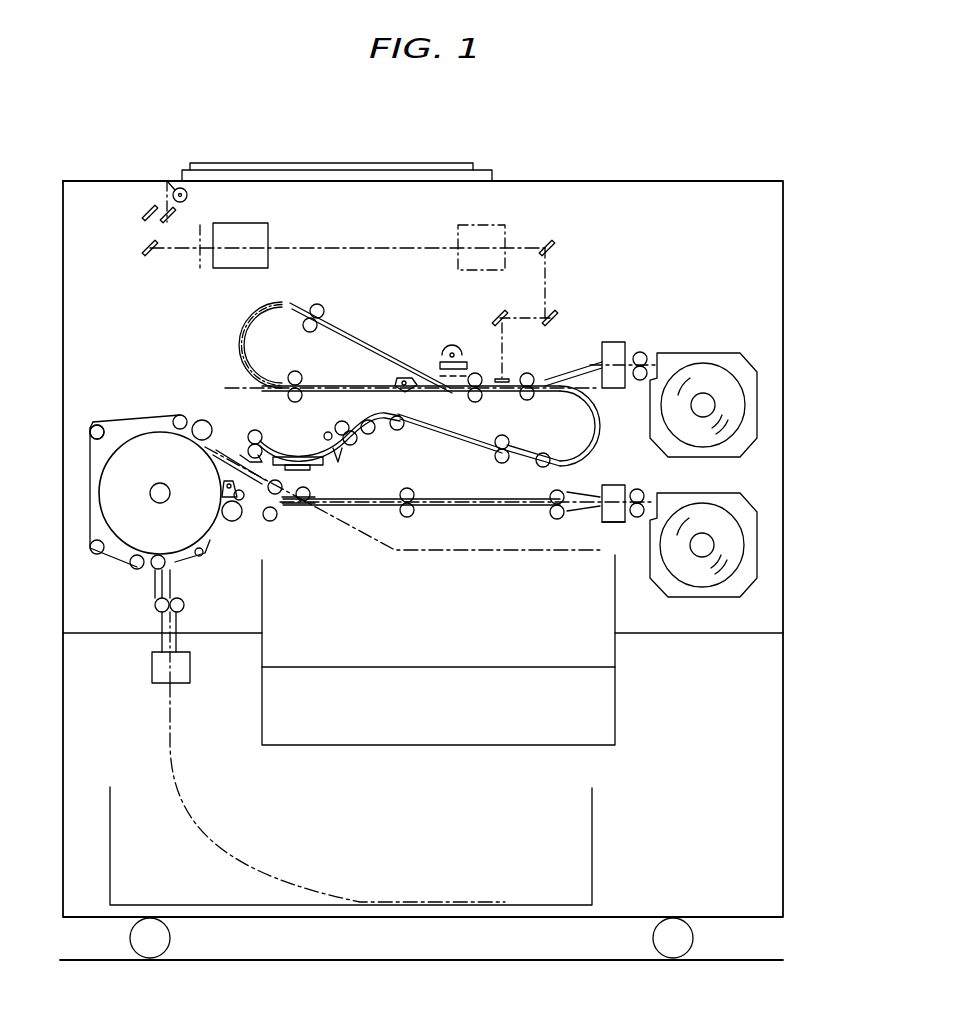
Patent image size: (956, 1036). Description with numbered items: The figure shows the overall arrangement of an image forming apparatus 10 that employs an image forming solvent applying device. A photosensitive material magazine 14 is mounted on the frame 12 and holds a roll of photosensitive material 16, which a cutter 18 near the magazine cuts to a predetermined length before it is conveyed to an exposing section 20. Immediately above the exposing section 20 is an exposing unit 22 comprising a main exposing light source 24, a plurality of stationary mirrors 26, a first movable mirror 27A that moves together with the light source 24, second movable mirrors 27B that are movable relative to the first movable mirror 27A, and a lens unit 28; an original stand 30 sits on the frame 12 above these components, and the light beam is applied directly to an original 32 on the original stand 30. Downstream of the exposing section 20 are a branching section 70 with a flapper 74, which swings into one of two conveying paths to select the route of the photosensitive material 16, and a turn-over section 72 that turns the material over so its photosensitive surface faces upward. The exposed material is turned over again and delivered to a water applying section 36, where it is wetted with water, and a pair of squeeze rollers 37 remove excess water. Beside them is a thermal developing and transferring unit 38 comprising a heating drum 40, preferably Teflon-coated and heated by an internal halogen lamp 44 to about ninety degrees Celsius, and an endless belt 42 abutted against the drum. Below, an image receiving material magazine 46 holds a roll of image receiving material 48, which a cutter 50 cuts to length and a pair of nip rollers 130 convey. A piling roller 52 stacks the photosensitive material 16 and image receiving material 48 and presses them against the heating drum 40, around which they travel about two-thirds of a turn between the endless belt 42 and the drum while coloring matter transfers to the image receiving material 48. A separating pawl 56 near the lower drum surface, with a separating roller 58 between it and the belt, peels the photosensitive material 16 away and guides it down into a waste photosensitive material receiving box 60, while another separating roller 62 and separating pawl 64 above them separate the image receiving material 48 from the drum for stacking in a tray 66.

The image forming apparatus 10 is at (165, 180).
The frame 12 is at (590, 181).
The photosensitive material magazine 14 is at (706, 353).
The photosensitive material 16 is at (614, 342).
The cutter 18 is at (614, 388).
The exposing section 20 is at (512, 402).
The exposing unit 22 is at (186, 266).
The main exposing light source 24 is at (188, 197).
The stationary mirrors 26 is at (553, 243).
The first movable mirror 27A is at (178, 218).
The second movable mirrors 27B is at (142, 210).
The lens unit 28 is at (268, 231).
The original stand 30 is at (493, 178).
The original 32 is at (455, 163).
The water applying section 36 is at (346, 445).
The pair of squeeze rollers 37 is at (253, 430).
The thermal developing and transferring unit 38 is at (160, 414).
The heating drum 40 is at (108, 497).
The endless belt 42 is at (120, 420).
The halogen lamp 44 is at (162, 482).
The image receiving material magazine 46 is at (738, 495).
The image receiving material 48 is at (612, 525).
The cutter 50 is at (614, 485).
The piling roller 52 is at (204, 420).
The separating pawl 56 is at (208, 556).
The separating roller 58 is at (152, 570).
The waste photosensitive material receiving box 60 is at (110, 798).
The separating roller 62 is at (240, 520).
The separating pawl 64 is at (222, 489).
The tray 66 is at (262, 608).
The branching section 70 is at (372, 372).
The turn-over section 72 is at (292, 302).
The flapper 74 is at (413, 390).
The pair of nip rollers 130 is at (644, 488).